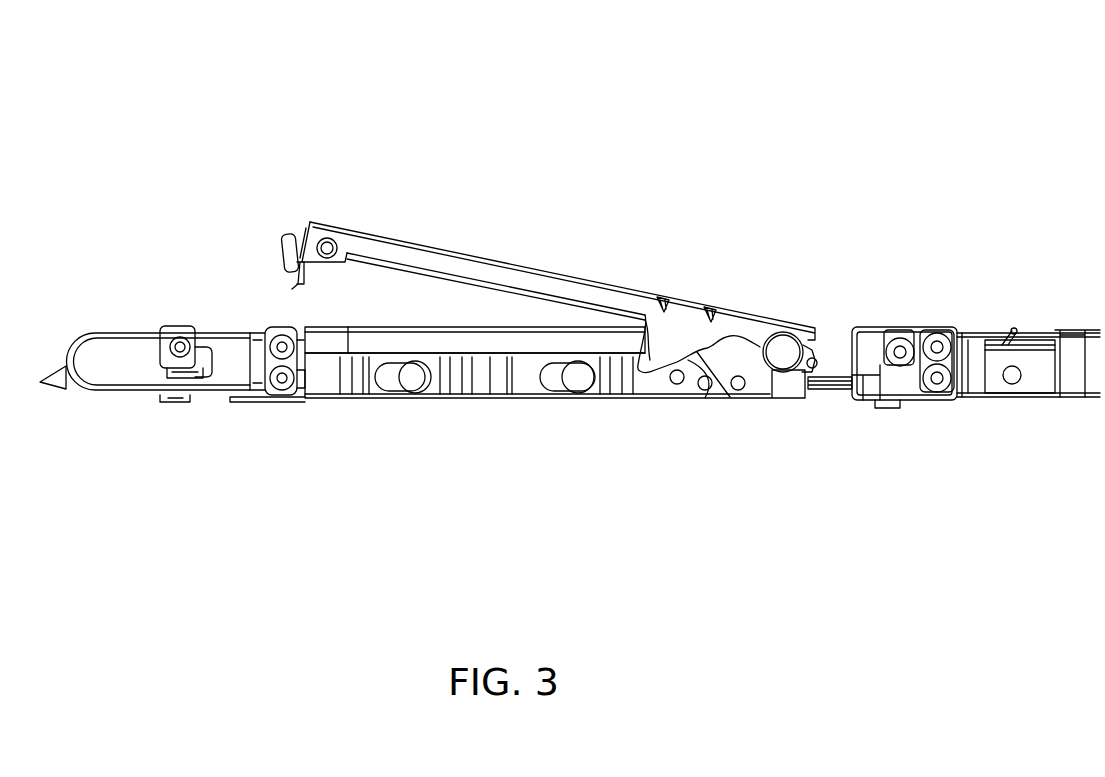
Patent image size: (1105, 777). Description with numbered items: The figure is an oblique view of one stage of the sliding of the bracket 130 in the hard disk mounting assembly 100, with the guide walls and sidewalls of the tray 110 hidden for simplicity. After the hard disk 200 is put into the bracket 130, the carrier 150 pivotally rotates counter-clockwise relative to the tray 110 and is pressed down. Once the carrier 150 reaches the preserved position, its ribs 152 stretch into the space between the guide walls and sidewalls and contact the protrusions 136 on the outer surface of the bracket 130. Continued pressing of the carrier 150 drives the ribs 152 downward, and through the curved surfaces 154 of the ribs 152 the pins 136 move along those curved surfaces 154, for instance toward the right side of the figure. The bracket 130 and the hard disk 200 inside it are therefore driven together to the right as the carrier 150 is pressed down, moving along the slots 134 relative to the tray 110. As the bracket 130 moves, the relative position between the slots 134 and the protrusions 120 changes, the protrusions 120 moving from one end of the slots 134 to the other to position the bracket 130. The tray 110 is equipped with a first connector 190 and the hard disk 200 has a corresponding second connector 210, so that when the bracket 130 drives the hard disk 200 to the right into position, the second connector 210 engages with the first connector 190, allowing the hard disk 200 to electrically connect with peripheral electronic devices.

The hinge assembly 100 is at (138, 68).
The tray 110 is at (245, 398).
The protrusions 120 is at (421, 378).
The bracket 130 is at (485, 378).
The slots 134 is at (389, 379).
The protrusions 136 is at (677, 382).
The carrier 150 is at (533, 268).
The ribs 152 is at (668, 343).
The curved surfaces 154 is at (690, 360).
The first connector 190 is at (877, 393).
The hard disk 200 is at (393, 328).
The second connector 210 is at (785, 383).